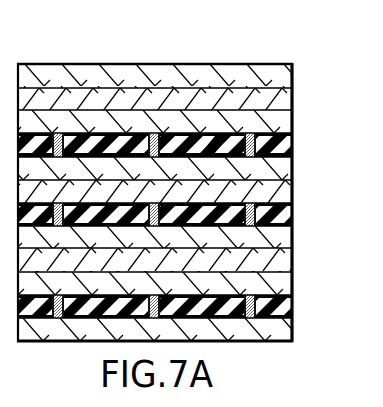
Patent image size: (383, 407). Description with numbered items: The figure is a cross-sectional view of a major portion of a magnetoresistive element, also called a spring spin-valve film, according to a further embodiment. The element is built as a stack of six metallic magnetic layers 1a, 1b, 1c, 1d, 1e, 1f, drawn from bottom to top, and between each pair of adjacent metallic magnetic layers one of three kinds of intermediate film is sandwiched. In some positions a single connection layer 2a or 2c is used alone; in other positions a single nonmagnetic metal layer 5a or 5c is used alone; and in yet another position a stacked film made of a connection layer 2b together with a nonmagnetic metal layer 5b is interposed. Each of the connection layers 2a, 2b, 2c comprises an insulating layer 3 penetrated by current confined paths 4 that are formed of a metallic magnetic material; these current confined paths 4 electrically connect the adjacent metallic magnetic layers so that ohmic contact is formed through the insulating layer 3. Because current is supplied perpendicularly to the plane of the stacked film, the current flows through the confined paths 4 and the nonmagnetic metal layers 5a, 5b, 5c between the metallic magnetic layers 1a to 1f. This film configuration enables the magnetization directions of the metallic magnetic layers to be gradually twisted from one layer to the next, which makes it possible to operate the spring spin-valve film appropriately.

The metallic magnetic layer 1a is at (294, 325).
The metallic magnetic layer 1b is at (294, 278).
The metallic magnetic layer 1c is at (294, 232).
The metallic magnetic layer 1d is at (294, 166).
The metallic magnetic layer 1e is at (294, 121).
The metallic magnetic layer 1f is at (294, 78).
The connection layer 2a is at (294, 302).
The connection layer 2b is at (294, 213).
The connection layer 2c is at (294, 138).
The insulating layer 3 is at (203, 133).
The current confined paths 4 is at (157, 132).
The nonmagnetic metal layer 5a is at (294, 258).
The nonmagnetic metal layer 5b is at (294, 185).
The nonmagnetic metal layer 5c is at (294, 93).